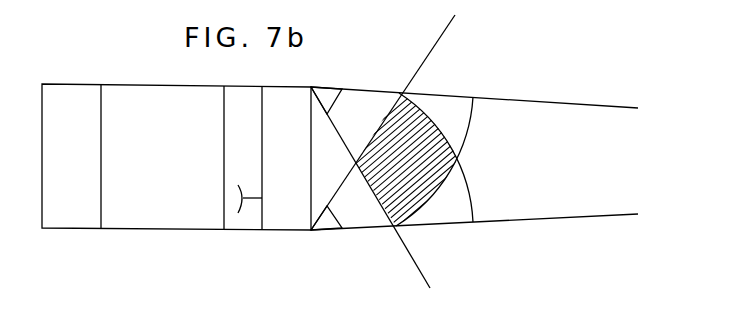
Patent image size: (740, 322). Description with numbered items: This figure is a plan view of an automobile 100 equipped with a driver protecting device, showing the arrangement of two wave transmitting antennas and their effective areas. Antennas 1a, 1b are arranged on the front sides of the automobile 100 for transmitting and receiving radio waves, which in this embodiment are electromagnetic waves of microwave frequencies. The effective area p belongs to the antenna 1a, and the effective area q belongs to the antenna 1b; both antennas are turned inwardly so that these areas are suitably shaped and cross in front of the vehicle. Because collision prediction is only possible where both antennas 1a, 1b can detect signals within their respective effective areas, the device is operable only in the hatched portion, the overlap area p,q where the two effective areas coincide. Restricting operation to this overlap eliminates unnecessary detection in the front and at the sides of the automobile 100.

The automobile 100 is at (164, 85).
The antenna 1a is at (325, 91).
The antenna 1b is at (325, 232).
The effective area of antenna 1a p is at (370, 105).
The effective area of antenna 1b q is at (368, 214).
The hatched overlap area p,q is at (422, 130).